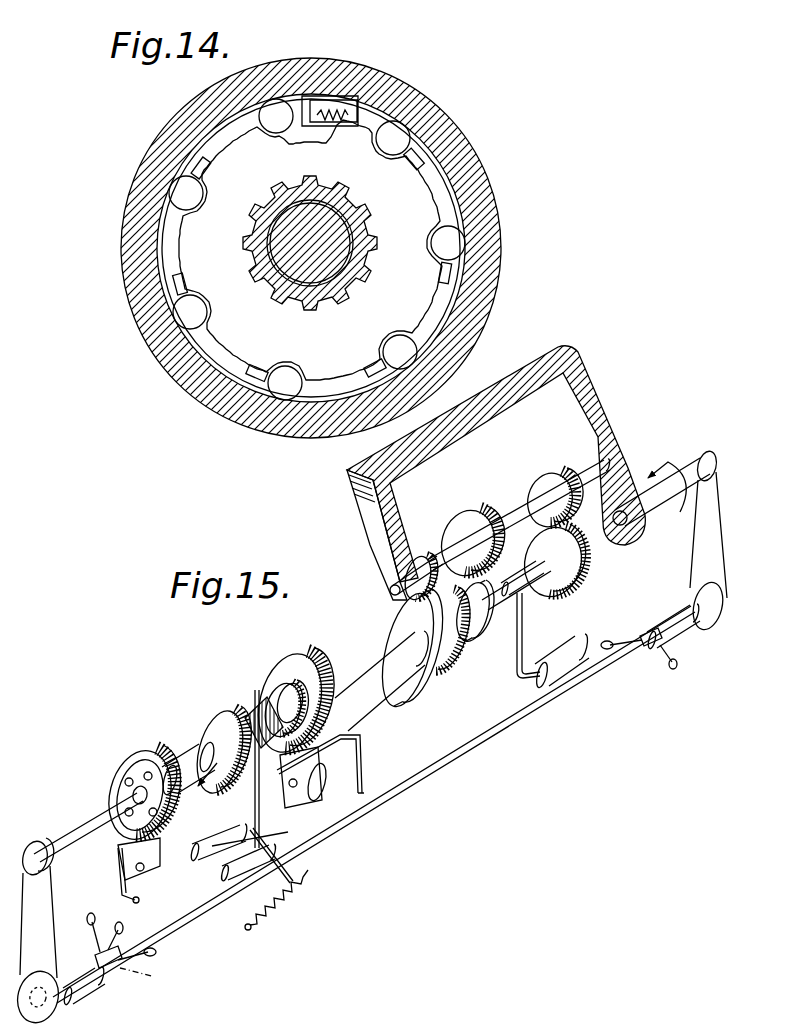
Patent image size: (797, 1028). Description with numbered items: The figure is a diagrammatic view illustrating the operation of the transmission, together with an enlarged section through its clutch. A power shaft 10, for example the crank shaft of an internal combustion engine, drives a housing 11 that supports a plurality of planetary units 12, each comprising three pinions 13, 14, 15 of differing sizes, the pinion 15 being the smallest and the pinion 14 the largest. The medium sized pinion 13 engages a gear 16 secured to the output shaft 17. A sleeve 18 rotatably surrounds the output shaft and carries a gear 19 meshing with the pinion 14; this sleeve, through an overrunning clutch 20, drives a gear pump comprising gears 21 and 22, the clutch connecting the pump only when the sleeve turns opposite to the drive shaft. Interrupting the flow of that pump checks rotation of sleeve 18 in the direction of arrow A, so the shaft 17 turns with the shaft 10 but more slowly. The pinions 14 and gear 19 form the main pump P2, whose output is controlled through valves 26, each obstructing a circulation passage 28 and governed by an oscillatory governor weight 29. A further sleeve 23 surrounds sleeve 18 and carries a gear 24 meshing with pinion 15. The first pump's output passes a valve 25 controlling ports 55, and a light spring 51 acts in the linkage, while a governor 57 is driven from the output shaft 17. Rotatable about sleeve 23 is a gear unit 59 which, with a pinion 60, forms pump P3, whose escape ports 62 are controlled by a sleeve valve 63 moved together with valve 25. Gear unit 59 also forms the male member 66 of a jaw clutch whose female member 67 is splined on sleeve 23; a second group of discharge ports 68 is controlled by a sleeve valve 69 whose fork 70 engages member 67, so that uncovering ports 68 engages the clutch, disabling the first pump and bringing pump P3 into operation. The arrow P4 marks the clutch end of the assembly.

In FIG. 15, the power shaft 10 is at (676, 465).
In FIG. 15, the housing 11 is at (605, 387).
In FIG. 15, the planetary unit 12 is at (442, 520).
In FIG. 15, the pinion 13 is at (547, 472).
In FIG. 15, the pinion 14 is at (470, 517).
In FIG. 15, the pinion 15 is at (407, 553).
In FIG. 15, the gear 16 is at (572, 567).
In FIG. 14, the output shaft 17 is at (333, 262).
In FIG. 15, the output shaft 17 is at (90, 826).
In FIG. 14, the sleeve 18 is at (378, 233).
In FIG. 15, the sleeve 18 is at (465, 625).
In FIG. 15, the gear 19 is at (482, 625).
In FIG. 14, the overrunning clutch 20 is at (440, 188).
In FIG. 15, the overrunning clutch 20 is at (130, 777).
In FIG. 15, the gear 21 is at (155, 752).
In FIG. 15, the gear 22 is at (172, 884).
In FIG. 15, the sleeve 23 is at (392, 680).
In FIG. 15, the gear 24 is at (433, 677).
In FIG. 15, the valve 25 is at (200, 873).
In FIG. 15, the valve 26 is at (558, 648).
In FIG. 15, the circulation passage 28 is at (540, 673).
In FIG. 15, the governor weight 29 is at (607, 632).
In FIG. 15, the spring 51 is at (250, 927).
In FIG. 15, the ports 55 is at (235, 887).
In FIG. 15, the governor 57 is at (112, 948).
In FIG. 15, the gear unit 59 is at (338, 651).
In FIG. 15, the pinion 60 is at (322, 792).
In FIG. 15, the escape ports 62 is at (217, 837).
In FIG. 15, the sleeve valve 63 is at (238, 840).
In FIG. 15, the male member 66 is at (272, 672).
In FIG. 15, the female member 67 is at (240, 700).
In FIG. 15, the discharge ports 68 is at (280, 835).
In FIG. 15, the sleeve valve 69 is at (275, 848).
In FIG. 15, the fork 70 is at (260, 800).
In FIG. 15, the arrow A is at (183, 748).
In FIG. 15, the main pump P2 is at (450, 515).
In FIG. 15, the gear pump P3 is at (320, 655).
In FIG. 15, the position P4 is at (107, 755).